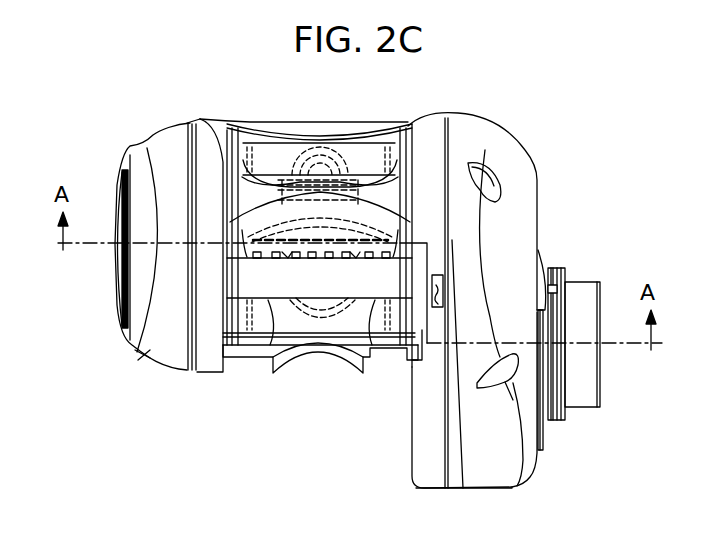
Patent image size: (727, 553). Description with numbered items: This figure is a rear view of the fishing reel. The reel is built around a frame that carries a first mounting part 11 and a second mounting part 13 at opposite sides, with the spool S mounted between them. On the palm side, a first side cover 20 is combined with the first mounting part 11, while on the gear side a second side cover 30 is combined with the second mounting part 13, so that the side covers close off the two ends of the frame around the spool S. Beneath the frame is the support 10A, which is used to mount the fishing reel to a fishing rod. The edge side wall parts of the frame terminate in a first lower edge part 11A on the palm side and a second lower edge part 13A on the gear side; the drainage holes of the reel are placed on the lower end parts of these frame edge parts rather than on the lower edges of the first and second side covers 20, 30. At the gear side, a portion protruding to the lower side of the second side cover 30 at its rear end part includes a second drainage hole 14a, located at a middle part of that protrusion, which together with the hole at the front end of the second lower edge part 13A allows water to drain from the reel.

The first side cover 20 is at (158, 350).
The first mounting part 11 is at (202, 366).
The first lower edge part 11A is at (200, 373).
The spool S is at (270, 308).
The support 10A is at (323, 368).
The second mounting part 13 is at (443, 410).
The second lower edge part 13A is at (432, 490).
The second side cover 30 is at (497, 472).
The second drainage hole 14a is at (437, 294).